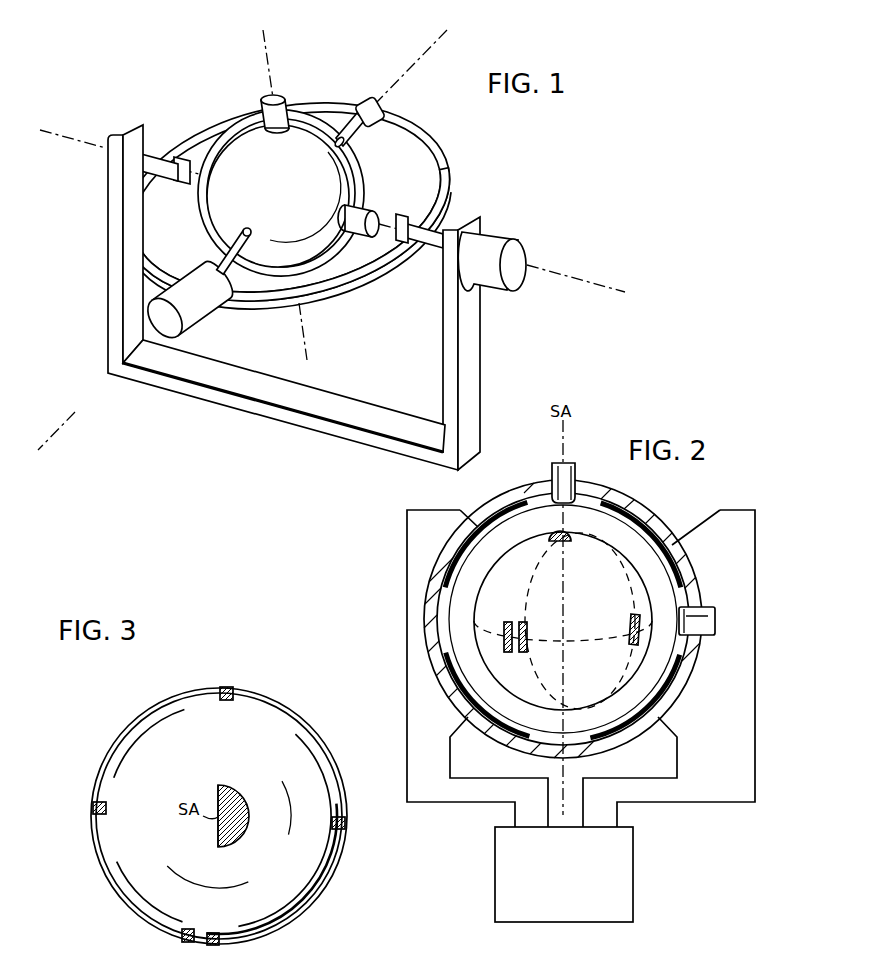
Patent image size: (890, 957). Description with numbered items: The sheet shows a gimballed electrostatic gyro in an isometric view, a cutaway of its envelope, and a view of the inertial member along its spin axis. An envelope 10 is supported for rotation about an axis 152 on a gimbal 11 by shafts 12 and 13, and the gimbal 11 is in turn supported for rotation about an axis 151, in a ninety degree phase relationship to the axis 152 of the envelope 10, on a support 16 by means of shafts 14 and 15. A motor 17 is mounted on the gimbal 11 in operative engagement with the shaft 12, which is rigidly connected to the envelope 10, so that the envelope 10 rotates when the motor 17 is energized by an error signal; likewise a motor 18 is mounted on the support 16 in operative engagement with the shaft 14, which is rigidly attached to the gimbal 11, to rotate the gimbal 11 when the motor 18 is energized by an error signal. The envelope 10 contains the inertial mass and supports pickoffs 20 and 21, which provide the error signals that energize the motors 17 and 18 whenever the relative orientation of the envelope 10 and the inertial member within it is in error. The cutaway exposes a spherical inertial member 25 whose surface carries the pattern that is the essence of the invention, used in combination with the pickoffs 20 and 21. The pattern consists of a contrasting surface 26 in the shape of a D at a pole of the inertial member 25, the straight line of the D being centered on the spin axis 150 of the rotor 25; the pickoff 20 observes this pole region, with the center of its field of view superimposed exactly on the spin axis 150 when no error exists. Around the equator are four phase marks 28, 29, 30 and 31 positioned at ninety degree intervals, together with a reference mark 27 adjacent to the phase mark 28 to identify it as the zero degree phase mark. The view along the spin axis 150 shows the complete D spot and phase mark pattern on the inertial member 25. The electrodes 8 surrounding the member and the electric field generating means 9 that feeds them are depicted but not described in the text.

In FIG. 2, the electrodes 8 is at (452, 580).
In FIG. 2, the electric field generating means 9 is at (495, 874).
In FIG. 1, the envelope 10 is at (208, 193).
In FIG. 2, the envelope 10 is at (664, 550).
In FIG. 1, the gimbal 11 is at (288, 206).
In FIG. 1, the shaft 12 is at (222, 265).
In FIG. 1, the shaft 13 is at (352, 131).
In FIG. 1, the shaft 14 is at (437, 237).
In FIG. 1, the shaft 15 is at (148, 157).
In FIG. 1, the support 16 is at (474, 358).
In FIG. 1, the motor 17 is at (184, 333).
In FIG. 1, the motor 18 is at (520, 253).
In FIG. 1, the pickoff 20 is at (274, 97).
In FIG. 2, the pickoff 20 is at (552, 472).
In FIG. 1, the pickoff 21 is at (370, 212).
In FIG. 2, the pickoff 21 is at (716, 622).
In FIG. 2, the spherical inertial member 25 is at (516, 558).
In FIG. 3, the spherical inertial member 25 is at (197, 705).
In FIG. 2, the contrasting surface 26 is at (566, 534).
In FIG. 3, the contrasting surface 26 is at (230, 787).
In FIG. 2, the reference mark 27 is at (508, 620).
In FIG. 3, the reference mark 27 is at (188, 930).
In FIG. 2, the phase mark 28 is at (523, 620).
In FIG. 3, the phase mark 28 is at (214, 933).
In FIG. 2, the phase mark 29 is at (630, 625).
In FIG. 3, the phase mark 29 is at (333, 820).
In FIG. 3, the phase mark 30 is at (228, 688).
In FIG. 3, the phase mark 31 is at (106, 807).
In FIG. 1, the spin axis 150 is at (265, 41).
In FIG. 2, the spin axis 150 is at (566, 433).
In FIG. 3, the spin axis 150 is at (217, 812).
In FIG. 1, the axis 151 is at (586, 280).
In FIG. 1, the axis 152 is at (413, 65).